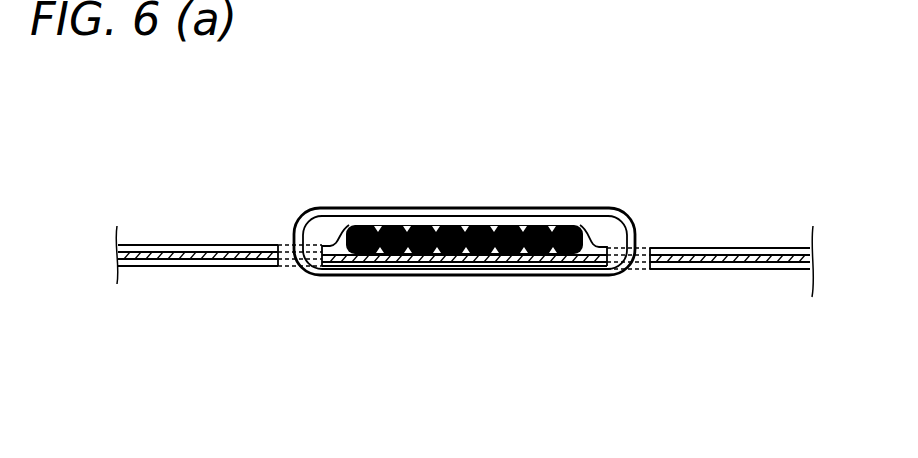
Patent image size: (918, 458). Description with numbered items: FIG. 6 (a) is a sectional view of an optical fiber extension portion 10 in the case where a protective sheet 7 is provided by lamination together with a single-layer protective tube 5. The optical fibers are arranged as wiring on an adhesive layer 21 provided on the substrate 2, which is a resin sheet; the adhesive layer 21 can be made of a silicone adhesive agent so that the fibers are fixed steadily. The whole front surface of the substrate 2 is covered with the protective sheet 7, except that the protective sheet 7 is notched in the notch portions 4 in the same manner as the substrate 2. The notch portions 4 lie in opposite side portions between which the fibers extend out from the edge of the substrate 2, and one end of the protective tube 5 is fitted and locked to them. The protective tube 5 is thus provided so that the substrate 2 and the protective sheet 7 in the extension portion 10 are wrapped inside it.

The substrate 2 is at (738, 269).
The adhesive layer 21 is at (759, 256).
The notch portions 4 is at (294, 268).
The protective tube 5 is at (300, 212).
The protective sheet 7 is at (676, 248).
The extension portion 10 is at (455, 225).